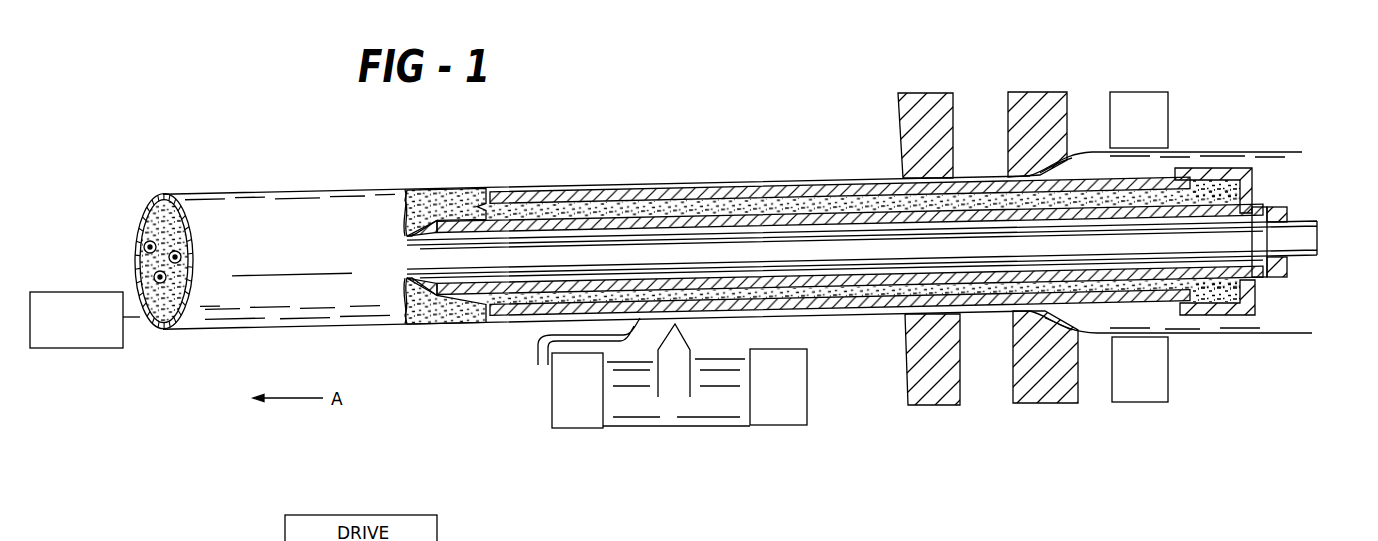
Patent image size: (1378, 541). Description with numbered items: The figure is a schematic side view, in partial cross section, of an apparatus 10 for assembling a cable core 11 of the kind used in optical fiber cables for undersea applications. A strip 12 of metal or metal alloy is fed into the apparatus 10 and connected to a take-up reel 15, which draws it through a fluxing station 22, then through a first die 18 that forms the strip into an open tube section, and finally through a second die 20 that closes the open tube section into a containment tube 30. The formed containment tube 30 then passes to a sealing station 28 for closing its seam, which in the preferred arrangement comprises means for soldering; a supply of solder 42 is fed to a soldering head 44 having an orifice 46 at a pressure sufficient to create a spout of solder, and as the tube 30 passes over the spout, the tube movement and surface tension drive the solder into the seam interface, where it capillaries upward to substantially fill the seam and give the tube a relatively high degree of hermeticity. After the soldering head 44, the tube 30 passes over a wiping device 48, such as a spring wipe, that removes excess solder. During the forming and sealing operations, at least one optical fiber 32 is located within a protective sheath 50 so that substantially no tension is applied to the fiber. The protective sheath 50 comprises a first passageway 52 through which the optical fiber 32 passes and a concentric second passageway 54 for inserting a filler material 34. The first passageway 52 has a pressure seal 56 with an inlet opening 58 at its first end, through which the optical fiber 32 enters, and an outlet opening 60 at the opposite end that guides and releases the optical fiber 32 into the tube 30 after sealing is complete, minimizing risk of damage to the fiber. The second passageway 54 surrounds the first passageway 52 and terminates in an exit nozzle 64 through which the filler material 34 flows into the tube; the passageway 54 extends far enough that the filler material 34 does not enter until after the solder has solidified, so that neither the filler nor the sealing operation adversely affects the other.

The apparatus 10 is at (687, 158).
The cable core 11 is at (208, 165).
The strip 12 is at (1238, 162).
The take-up reel 15 is at (50, 292).
The first die 18 is at (1062, 92).
The second die 20 is at (928, 93).
The fluxing station 22 is at (1170, 101).
The sealing station 28 is at (713, 433).
The containment tube 30 is at (163, 196).
The optical fiber 32 is at (141, 269).
The filler material 34 is at (149, 212).
The molten solder 42 is at (630, 403).
The soldering head 44 is at (688, 345).
The orifice 46 is at (657, 320).
The wiping device 48 is at (537, 353).
The protective sheath 50 is at (802, 183).
The first passageway 52 is at (1264, 207).
The second passageway 54 is at (1237, 303).
The pressure seal 56 is at (1282, 208).
The inlet opening 58 is at (1290, 262).
The outlet opening 60 is at (400, 276).
The exit nozzle 64 is at (486, 211).